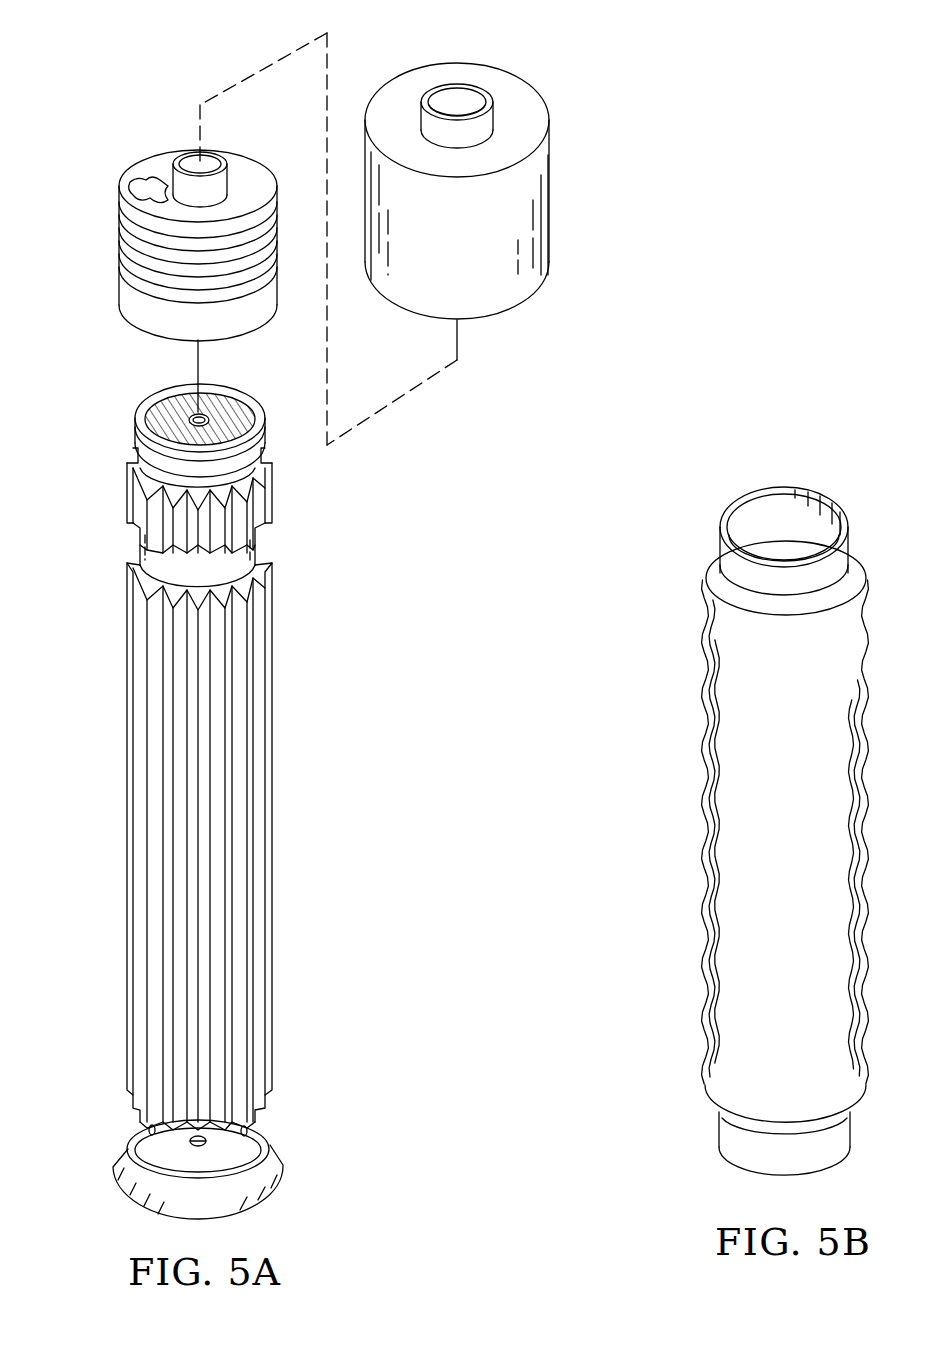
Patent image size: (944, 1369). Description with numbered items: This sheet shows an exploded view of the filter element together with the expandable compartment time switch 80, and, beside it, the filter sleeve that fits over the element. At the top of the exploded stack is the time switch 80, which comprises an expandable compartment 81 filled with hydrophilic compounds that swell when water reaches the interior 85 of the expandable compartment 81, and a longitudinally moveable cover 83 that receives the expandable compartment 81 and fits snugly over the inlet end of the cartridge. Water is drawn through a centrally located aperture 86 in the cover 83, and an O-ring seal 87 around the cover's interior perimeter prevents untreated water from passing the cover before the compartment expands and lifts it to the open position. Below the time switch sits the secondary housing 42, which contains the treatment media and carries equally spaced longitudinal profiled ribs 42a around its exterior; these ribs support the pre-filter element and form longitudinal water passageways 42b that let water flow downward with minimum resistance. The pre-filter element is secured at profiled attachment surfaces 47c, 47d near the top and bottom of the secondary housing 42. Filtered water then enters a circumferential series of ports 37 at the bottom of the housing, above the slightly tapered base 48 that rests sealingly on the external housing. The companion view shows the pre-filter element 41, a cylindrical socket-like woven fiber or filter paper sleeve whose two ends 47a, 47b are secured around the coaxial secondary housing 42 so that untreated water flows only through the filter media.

In FIG. 5A, the expandable compartment time switch 80 is at (652, 82).
In FIG. 5A, the expandable compartment 81 is at (130, 283).
In FIG. 5A, the interior of the expandable compartment 85 is at (148, 205).
In FIG. 5A, the moveable cover 83 is at (548, 100).
In FIG. 5A, the centrally located aperture 86 is at (478, 82).
In FIG. 5A, the O-ring seal 87 is at (137, 430).
In FIG. 5A, the longitudinal water passageways 42b is at (142, 612).
In FIG. 5A, the profiled attachment surface 47c is at (140, 540).
In FIG. 5A, the secondary housing 42 is at (127, 900).
In FIG. 5A, the longitudinal profiled ribs 42a is at (148, 948).
In FIG. 5A, the circumferential series of ports 37 is at (192, 1140).
In FIG. 5A, the tapered base 48 is at (282, 1158).
In FIG. 5A, the profiled attachment surface 47d is at (200, 1165).
In FIG. 5B, the end of pre-filter element 47a is at (722, 515).
In FIG. 5B, the pre-filter element 41 is at (705, 668).
In FIG. 5B, the end of pre-filter element 47b is at (718, 1130).